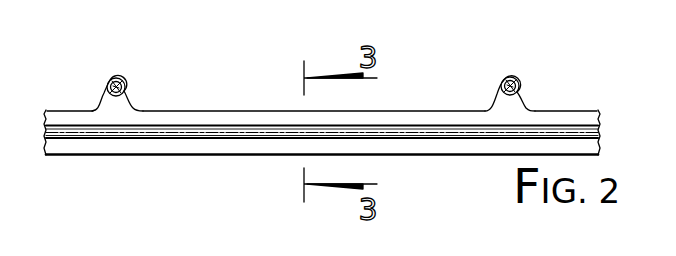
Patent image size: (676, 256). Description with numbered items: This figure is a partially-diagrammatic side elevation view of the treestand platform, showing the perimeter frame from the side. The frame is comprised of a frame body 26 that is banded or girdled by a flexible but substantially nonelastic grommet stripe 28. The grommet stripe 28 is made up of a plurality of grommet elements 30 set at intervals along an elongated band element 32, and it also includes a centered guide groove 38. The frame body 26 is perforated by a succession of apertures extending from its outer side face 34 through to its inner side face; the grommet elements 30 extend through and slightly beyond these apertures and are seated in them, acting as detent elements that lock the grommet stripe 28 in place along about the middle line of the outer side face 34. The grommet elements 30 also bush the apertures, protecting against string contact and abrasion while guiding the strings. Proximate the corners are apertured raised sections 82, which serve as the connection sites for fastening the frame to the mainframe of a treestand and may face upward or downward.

The frame body 26 is at (455, 110).
The grommet stripe 28 is at (444, 146).
The grommet elements 30 is at (232, 129).
The band element 32 is at (469, 139).
The outer side face 34 is at (205, 147).
The guide groove 38 is at (436, 137).
The apertured raised sections 82 is at (119, 78).